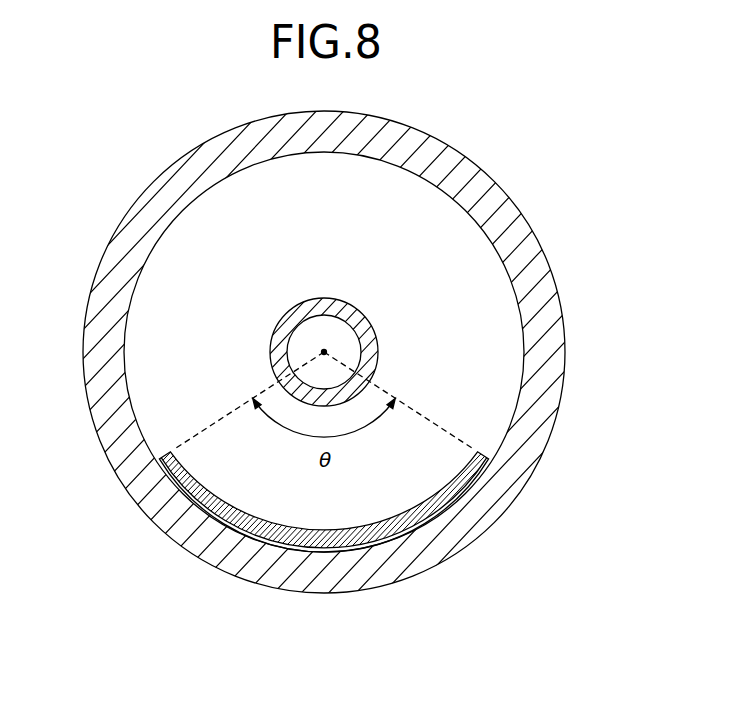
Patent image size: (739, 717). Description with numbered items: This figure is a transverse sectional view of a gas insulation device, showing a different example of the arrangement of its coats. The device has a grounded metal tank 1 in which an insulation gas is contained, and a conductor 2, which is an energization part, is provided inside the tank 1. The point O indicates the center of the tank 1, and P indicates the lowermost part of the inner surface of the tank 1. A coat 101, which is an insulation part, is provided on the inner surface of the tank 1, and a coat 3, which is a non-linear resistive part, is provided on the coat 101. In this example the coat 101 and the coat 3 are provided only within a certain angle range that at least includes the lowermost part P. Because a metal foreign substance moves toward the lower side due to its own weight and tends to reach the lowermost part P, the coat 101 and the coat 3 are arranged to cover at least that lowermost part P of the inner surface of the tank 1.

The tank 1 is at (530, 243).
The conductor 2 is at (370, 342).
The coat 3 is at (412, 517).
The coat 101 is at (458, 495).
The center of the tank O is at (324, 352).
The lowermost part of the inner surface of the tank P is at (326, 553).